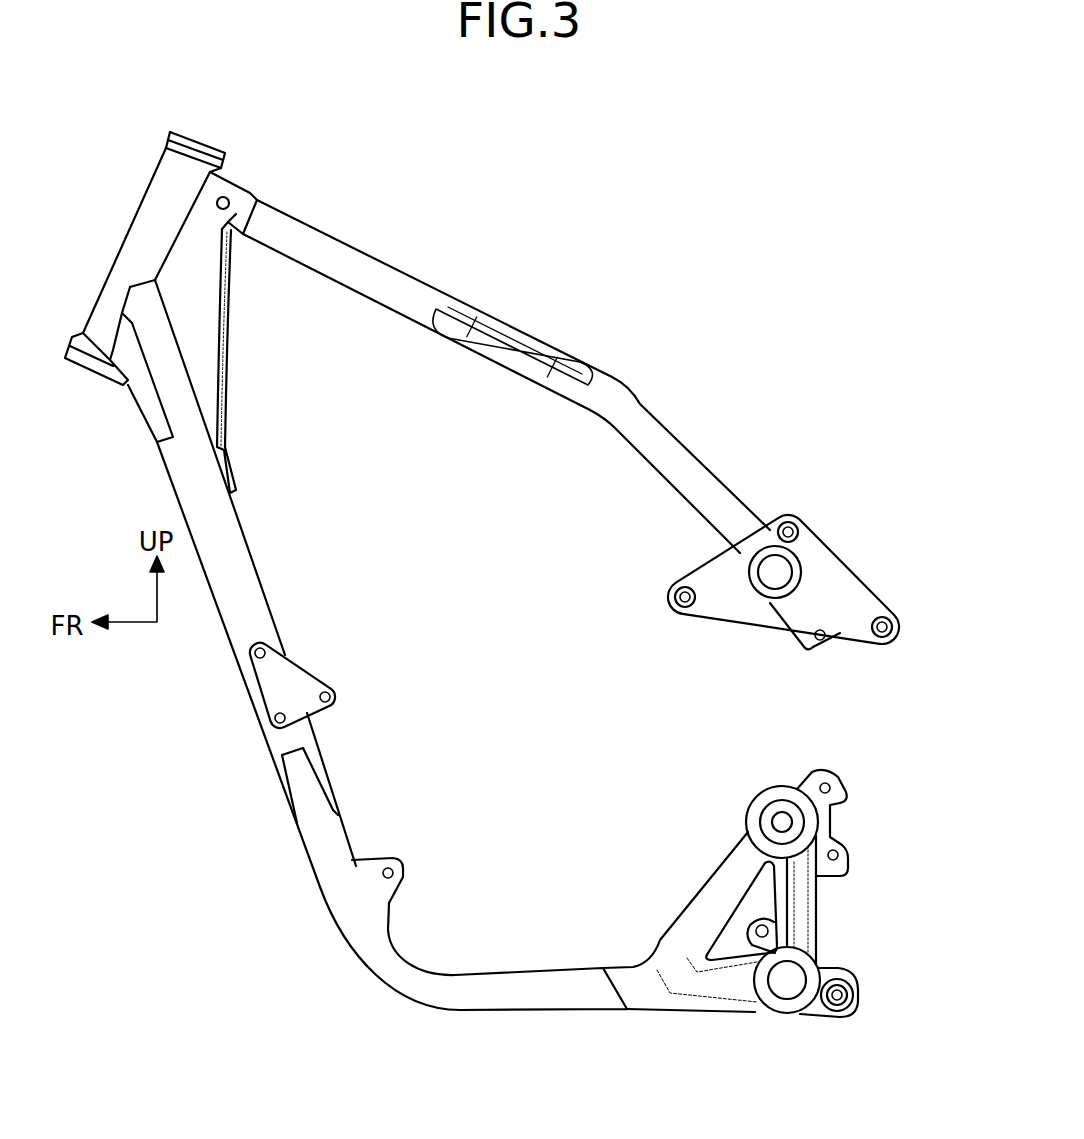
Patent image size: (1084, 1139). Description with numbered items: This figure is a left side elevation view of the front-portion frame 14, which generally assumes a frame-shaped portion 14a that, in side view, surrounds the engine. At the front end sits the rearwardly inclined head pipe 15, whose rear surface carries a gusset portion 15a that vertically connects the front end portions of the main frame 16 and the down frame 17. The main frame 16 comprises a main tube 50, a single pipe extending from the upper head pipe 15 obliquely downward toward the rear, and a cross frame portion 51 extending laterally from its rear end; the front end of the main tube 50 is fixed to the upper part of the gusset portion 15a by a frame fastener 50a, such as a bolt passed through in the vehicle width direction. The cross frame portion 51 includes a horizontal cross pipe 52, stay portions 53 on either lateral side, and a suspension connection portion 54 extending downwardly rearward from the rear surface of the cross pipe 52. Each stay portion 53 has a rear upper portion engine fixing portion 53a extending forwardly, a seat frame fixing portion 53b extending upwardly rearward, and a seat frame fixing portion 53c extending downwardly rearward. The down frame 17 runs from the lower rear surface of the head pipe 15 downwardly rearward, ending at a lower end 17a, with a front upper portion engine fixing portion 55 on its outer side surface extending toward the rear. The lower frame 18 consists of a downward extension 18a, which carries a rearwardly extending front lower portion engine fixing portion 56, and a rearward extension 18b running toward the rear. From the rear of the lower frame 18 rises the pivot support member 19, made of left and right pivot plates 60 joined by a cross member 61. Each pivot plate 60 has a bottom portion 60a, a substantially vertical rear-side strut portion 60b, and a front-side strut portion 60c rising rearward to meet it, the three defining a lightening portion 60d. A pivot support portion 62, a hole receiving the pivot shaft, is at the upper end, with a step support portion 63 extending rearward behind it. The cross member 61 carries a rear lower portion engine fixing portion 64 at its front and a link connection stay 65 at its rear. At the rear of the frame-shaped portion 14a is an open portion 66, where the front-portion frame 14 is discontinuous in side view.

The front-portion frame 14 is at (342, 65).
The frame-shaped portion 14a is at (600, 360).
The head pipe 15 is at (142, 198).
The gusset portion 15a is at (228, 282).
The main frame 16 is at (424, 268).
The down frame 17 is at (218, 636).
The lower end 17a is at (298, 820).
The lower frame 18 is at (476, 1026).
The downward extension 18a is at (342, 930).
The rearward extension 18b is at (556, 1010).
The pivot support member 19 is at (832, 923).
The main tube 50 is at (438, 298).
The frame fastener 50a is at (223, 197).
The cross frame portion 51 is at (828, 546).
The cross pipe 52 is at (818, 546).
The stay portion 53 is at (838, 576).
The rear upper portion engine fixing portion 53a is at (690, 574).
The seat frame fixing portion 53b is at (790, 515).
The seat frame fixing portion 53c is at (898, 618).
The suspension connection portion 54 is at (836, 641).
The front upper portion engine fixing portion 55 is at (340, 700).
The front lower portion engine fixing portion 56 is at (397, 886).
The pivot plate 60 is at (716, 897).
The bottom portion 60a is at (735, 987).
The rear-side strut portion 60b is at (800, 890).
The front-side strut portion 60c is at (706, 890).
The lightening portion 60d is at (727, 943).
The cross member 61 is at (790, 981).
The pivot support portion 62 is at (778, 800).
The step support portion 63 is at (846, 787).
The rear lower portion engine fixing portion 64 is at (757, 924).
The link connection stay 65 is at (852, 1004).
The open portion 66 is at (843, 719).